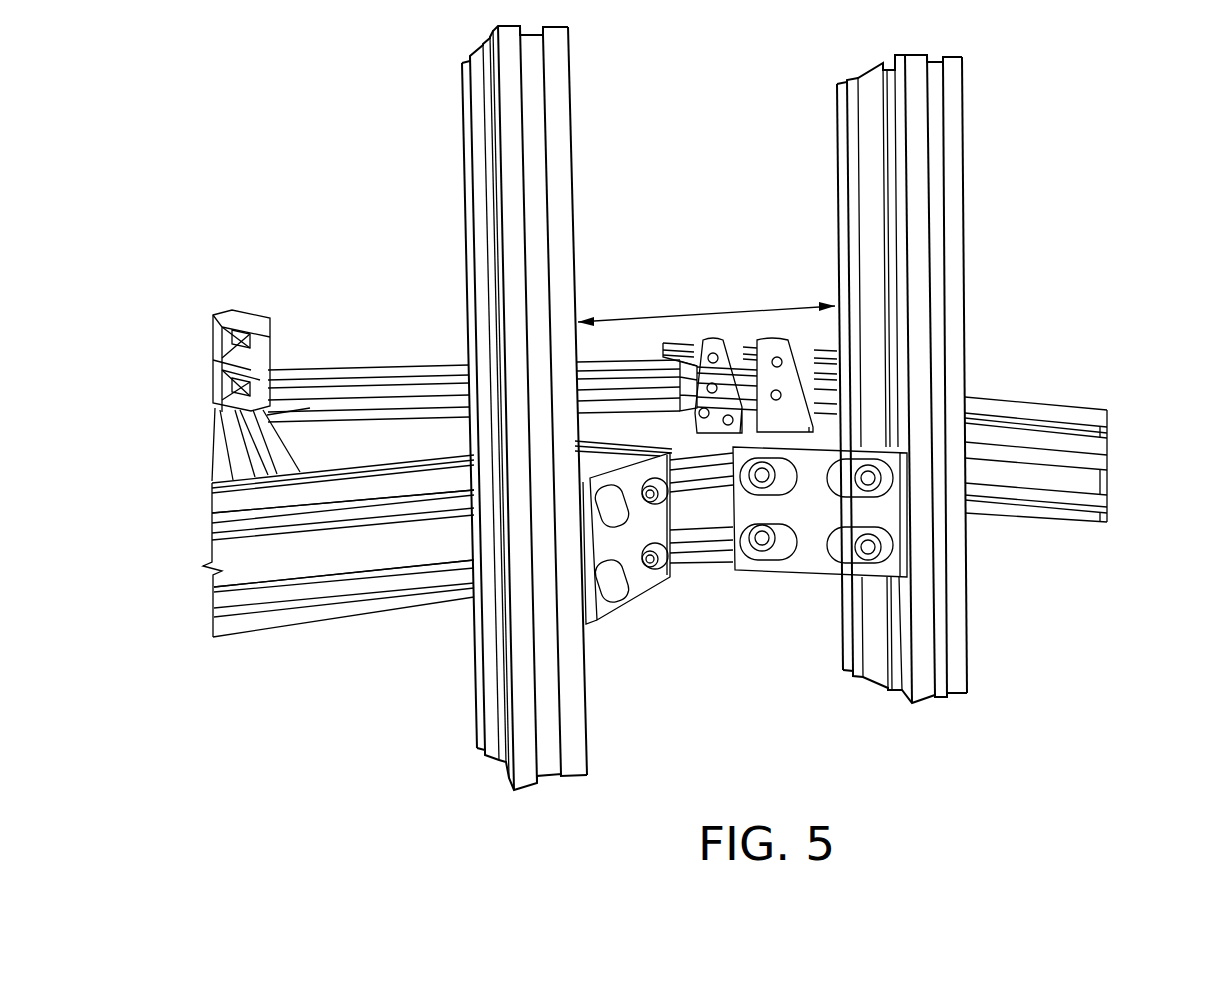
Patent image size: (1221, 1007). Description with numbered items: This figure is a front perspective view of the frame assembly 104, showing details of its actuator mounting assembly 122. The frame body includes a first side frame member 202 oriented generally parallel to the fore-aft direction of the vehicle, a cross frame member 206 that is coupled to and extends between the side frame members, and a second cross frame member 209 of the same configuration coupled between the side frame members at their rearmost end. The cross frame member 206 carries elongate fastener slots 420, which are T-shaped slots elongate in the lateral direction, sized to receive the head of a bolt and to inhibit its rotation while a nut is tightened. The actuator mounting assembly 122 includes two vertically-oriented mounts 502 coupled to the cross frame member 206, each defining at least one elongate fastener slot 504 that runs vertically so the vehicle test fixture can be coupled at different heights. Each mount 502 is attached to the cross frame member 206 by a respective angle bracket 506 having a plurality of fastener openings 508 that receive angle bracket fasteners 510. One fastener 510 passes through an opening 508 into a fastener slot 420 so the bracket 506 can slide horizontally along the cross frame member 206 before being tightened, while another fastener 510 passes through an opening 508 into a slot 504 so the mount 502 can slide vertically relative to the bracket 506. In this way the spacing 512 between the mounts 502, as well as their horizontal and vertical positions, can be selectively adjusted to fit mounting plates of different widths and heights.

The frame assembly 104 is at (360, 150).
The actuator mounting assembly 122 is at (998, 97).
The first side frame member 202 is at (1010, 403).
The cross frame member 206 is at (431, 564).
The second cross frame member 209 is at (320, 385).
The fastener slots 420 is at (260, 522).
The vertically-oriented mounts 502 is at (739, 450).
The elongate fastener slot 504 is at (485, 243).
The angle bracket 506 is at (900, 562).
The fastener openings 508 is at (775, 470).
The angle bracket fastener 510 is at (800, 550).
The spacing 512 is at (700, 312).